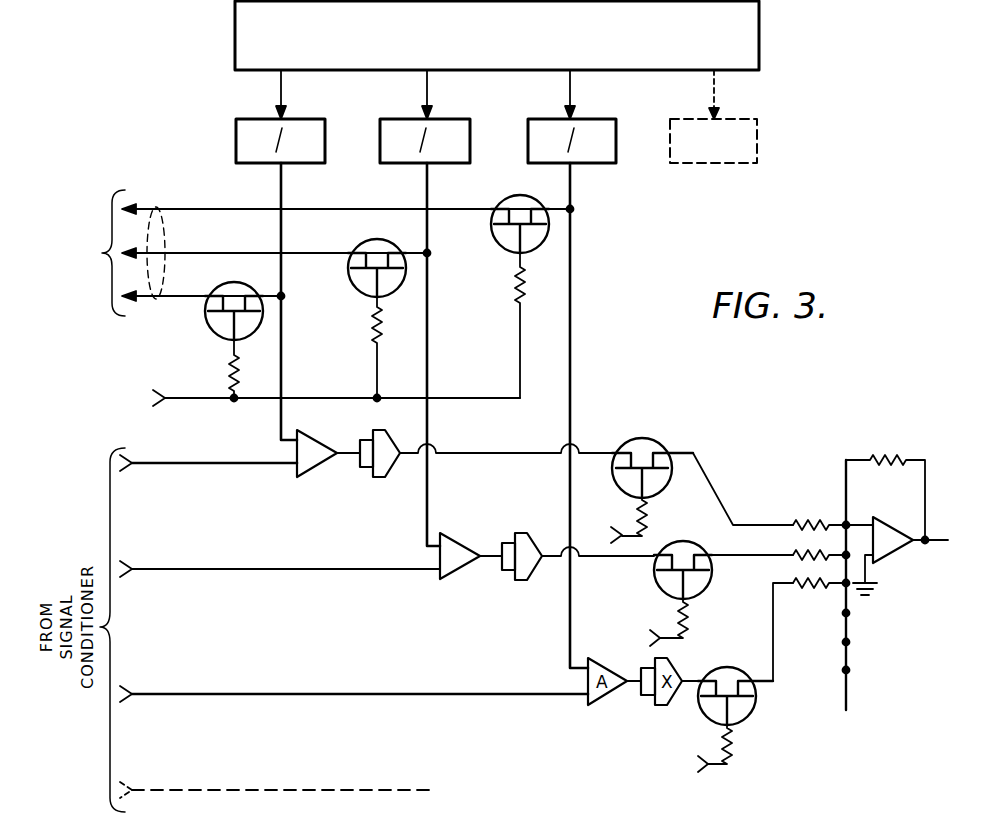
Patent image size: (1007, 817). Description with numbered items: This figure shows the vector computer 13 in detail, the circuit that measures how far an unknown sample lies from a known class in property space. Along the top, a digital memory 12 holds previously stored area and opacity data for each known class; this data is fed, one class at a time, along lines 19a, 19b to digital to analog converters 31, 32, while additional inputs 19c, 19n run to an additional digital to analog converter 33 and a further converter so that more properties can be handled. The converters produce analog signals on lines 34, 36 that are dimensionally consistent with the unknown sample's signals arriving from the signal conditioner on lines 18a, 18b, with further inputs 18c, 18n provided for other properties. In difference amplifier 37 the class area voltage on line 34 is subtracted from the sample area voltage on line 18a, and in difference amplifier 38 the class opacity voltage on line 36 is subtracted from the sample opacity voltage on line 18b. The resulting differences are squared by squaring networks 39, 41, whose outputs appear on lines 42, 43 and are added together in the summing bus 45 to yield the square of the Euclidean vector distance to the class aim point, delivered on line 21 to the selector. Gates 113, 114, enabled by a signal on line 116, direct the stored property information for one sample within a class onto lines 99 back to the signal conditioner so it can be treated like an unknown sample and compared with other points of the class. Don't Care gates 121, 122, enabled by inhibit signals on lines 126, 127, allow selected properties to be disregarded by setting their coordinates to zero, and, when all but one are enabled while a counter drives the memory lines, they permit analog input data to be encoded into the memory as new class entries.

The digital memory 12 is at (759, 38).
The vector computer 13 is at (160, 132).
The line 19a is at (281, 86).
The line 19b is at (427, 86).
The additional input 19c is at (570, 86).
The additional input 19n is at (714, 86).
The digital to analog converter 31 is at (236, 155).
The digital to analog converter 32 is at (380, 155).
The additional digital to analog converter 33 is at (528, 155).
The line 34 is at (281, 186).
The line 36 is at (427, 186).
The lines 99 is at (156, 208).
The gate 113 is at (207, 324).
The gate 114 is at (352, 290).
The line 116 is at (200, 400).
The line 18a is at (210, 463).
The line 18b is at (245, 569).
The input 18c is at (245, 694).
The input 18n is at (313, 790).
The difference amplifier 37 is at (312, 478).
The difference amplifier 38 is at (455, 580).
The squaring network 39 is at (380, 477).
The squaring network 41 is at (528, 580).
The line 42 is at (476, 453).
The line 43 is at (628, 553).
The Don't Care gate 121 is at (655, 440).
The Don't Care gate 122 is at (658, 582).
The line 126 is at (626, 534).
The line 127 is at (660, 638).
The summing bus 45 is at (822, 482).
The line 21 is at (935, 541).